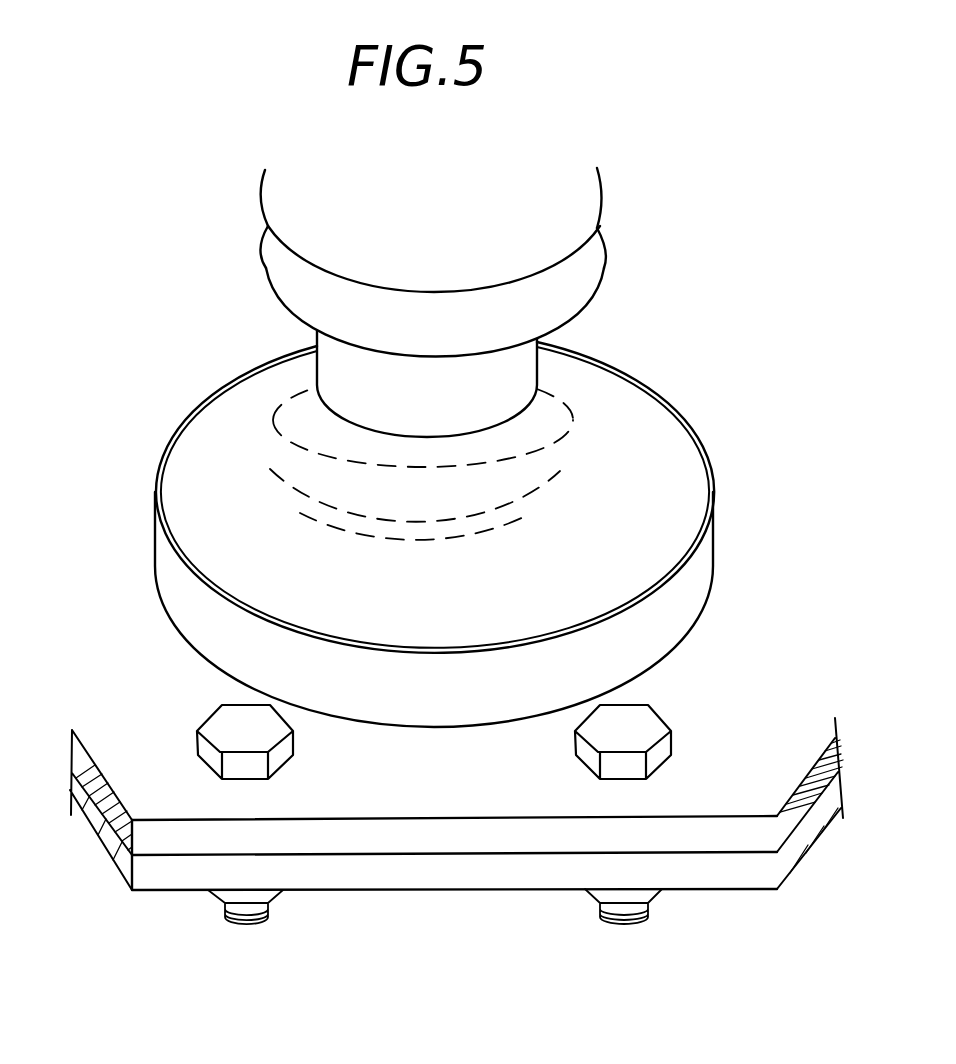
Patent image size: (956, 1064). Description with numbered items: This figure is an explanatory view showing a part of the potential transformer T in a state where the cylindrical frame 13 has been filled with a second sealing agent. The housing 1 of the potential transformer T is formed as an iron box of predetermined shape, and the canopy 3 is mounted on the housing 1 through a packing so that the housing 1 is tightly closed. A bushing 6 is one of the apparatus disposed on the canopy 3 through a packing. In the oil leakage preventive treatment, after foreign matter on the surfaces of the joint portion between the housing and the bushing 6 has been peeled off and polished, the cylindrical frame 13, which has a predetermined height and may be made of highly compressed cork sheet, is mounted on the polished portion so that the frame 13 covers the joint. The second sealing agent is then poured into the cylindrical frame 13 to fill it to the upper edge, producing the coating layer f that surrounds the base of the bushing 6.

The potential transformer T is at (680, 325).
The bushing 6 is at (577, 265).
The cylindrical frame 13 is at (697, 568).
The coating layer f is at (668, 443).
The canopy 3 is at (438, 825).
The housing 1 is at (438, 880).